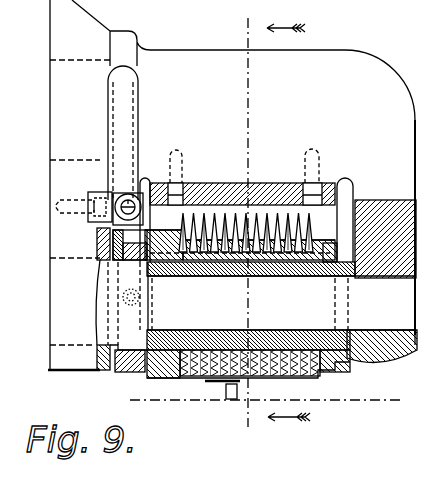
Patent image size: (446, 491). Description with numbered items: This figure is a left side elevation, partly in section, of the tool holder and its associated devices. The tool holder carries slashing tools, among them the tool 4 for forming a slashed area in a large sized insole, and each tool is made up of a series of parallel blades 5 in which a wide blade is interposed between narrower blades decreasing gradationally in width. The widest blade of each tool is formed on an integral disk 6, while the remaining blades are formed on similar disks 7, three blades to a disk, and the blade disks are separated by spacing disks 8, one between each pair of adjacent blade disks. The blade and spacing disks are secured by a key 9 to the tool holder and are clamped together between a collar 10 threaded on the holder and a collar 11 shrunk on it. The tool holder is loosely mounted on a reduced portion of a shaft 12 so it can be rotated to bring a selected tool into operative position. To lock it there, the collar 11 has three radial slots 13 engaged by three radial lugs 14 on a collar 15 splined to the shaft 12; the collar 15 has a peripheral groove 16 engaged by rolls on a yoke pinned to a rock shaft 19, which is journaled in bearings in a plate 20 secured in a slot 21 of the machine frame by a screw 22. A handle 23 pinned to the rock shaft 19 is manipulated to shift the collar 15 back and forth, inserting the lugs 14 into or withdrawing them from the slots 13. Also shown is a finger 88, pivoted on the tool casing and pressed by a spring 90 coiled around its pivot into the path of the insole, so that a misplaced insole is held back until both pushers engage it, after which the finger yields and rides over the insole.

The tool 4 is at (312, 268).
The blades 5 is at (204, 211).
The integral disk 6 is at (250, 225).
The disks 7 is at (265, 222).
The spacing disks 8 is at (196, 250).
The key 9 is at (160, 253).
The collar 10 is at (335, 262).
The collar 11 is at (163, 385).
The shaft 12 is at (405, 297).
The radial slots 13 is at (135, 370).
The radial lugs 14 is at (150, 376).
The collar 15 is at (100, 362).
The peripheral groove 16 is at (120, 375).
The rock shaft 19 is at (118, 198).
The plate 20 is at (110, 196).
The slot 21 is at (90, 206).
The screw 22 is at (80, 214).
The handle 23 is at (128, 113).
The finger 88 is at (226, 399).
The spring 90 is at (214, 396).